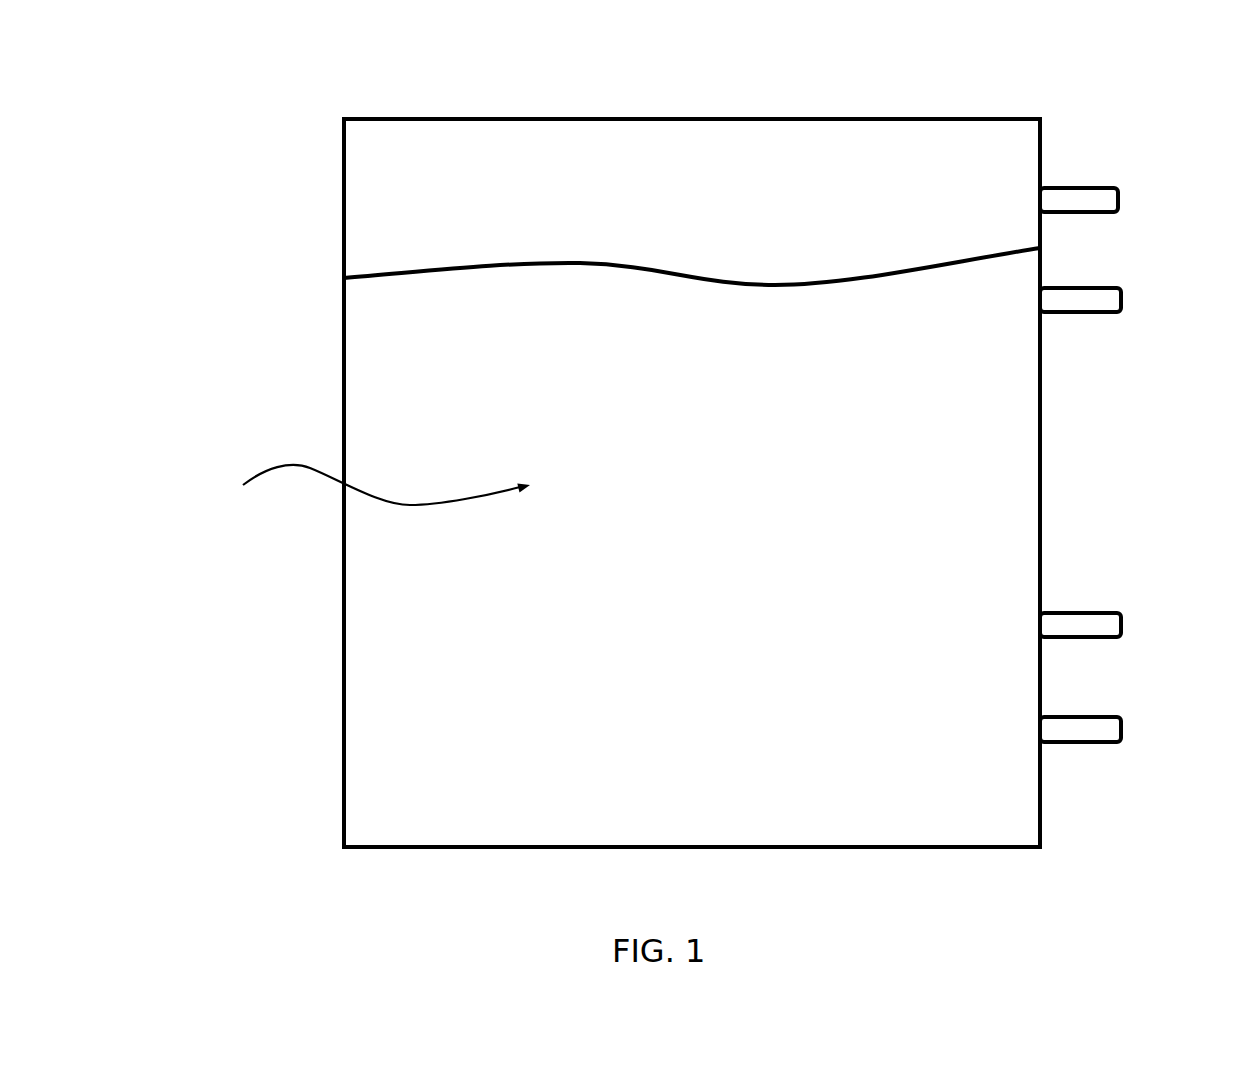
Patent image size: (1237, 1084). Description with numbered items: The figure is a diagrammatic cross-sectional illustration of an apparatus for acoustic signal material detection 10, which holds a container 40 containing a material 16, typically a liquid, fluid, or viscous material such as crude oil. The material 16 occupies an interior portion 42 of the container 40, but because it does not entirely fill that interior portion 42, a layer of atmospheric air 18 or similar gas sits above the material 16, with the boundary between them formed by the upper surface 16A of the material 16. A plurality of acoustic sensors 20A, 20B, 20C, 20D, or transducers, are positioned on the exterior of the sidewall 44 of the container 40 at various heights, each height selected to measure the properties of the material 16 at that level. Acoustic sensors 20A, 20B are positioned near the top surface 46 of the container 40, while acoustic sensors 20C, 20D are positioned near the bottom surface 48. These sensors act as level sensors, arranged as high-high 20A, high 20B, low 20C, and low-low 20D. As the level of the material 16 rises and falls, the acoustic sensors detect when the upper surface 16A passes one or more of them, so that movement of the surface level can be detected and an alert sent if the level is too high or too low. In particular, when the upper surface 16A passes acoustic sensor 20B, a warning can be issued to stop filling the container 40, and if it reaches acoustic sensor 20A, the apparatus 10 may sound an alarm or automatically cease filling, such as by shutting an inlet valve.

The apparatus for acoustic signal material detection 10 is at (233, 143).
The container 40 is at (872, 82).
The top surface 46 is at (598, 118).
The sidewall 44 is at (1041, 442).
The bottom surface 48 is at (772, 848).
The layer of atmospheric air 18 is at (709, 199).
The material 16 is at (709, 533).
The upper surface 16A is at (775, 287).
The interior portion 42 is at (372, 490).
The acoustic sensor 20A is at (1120, 197).
The acoustic sensor 20B is at (1122, 297).
The acoustic sensor 20C is at (1121, 622).
The acoustic sensor 20D is at (1121, 724).